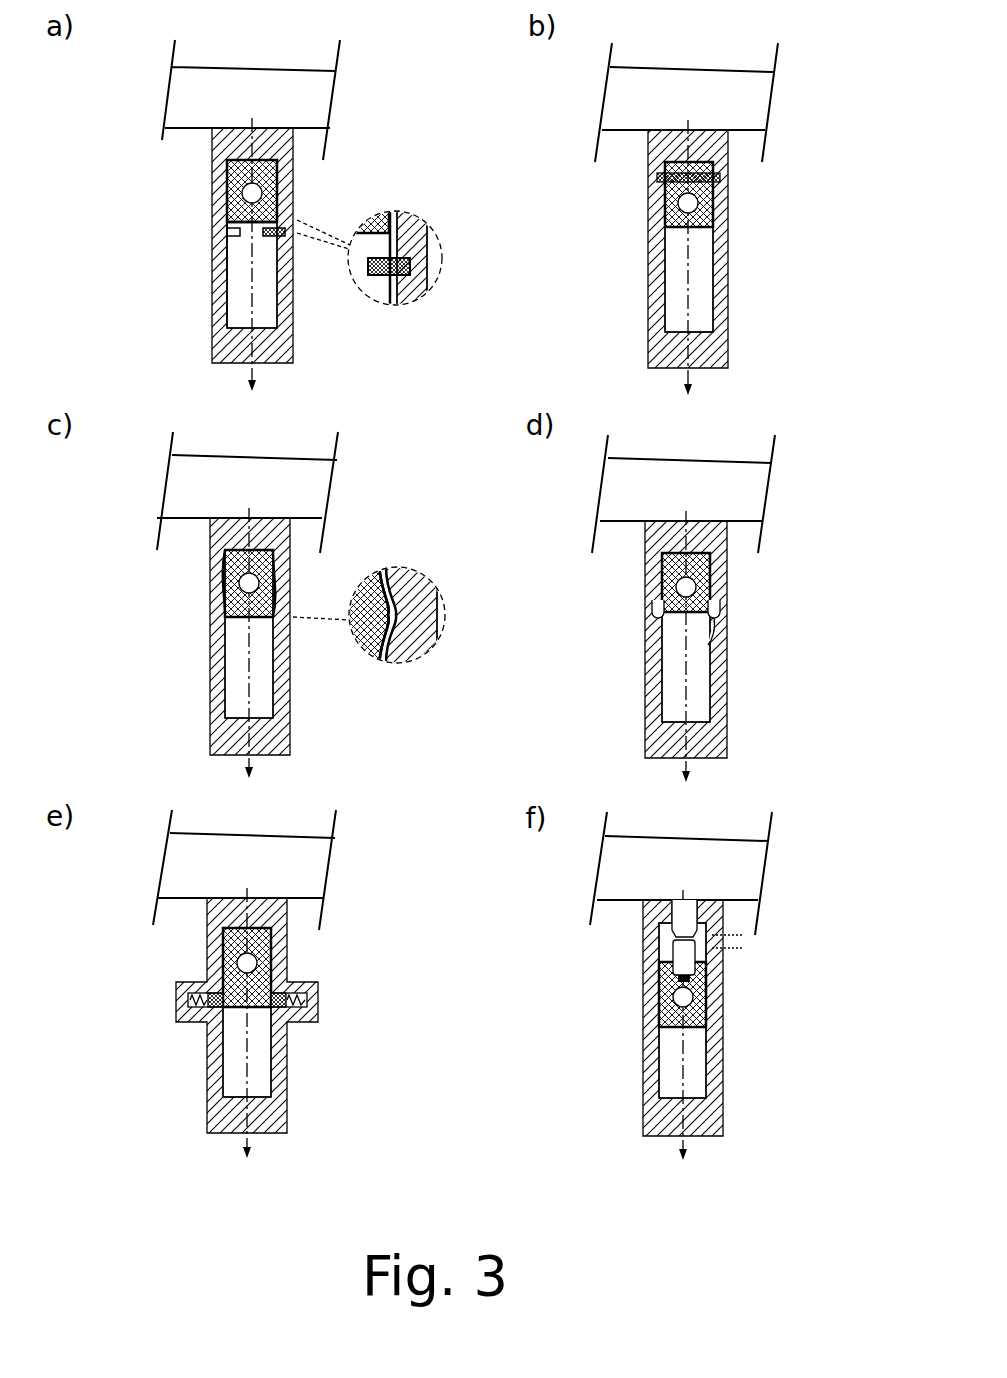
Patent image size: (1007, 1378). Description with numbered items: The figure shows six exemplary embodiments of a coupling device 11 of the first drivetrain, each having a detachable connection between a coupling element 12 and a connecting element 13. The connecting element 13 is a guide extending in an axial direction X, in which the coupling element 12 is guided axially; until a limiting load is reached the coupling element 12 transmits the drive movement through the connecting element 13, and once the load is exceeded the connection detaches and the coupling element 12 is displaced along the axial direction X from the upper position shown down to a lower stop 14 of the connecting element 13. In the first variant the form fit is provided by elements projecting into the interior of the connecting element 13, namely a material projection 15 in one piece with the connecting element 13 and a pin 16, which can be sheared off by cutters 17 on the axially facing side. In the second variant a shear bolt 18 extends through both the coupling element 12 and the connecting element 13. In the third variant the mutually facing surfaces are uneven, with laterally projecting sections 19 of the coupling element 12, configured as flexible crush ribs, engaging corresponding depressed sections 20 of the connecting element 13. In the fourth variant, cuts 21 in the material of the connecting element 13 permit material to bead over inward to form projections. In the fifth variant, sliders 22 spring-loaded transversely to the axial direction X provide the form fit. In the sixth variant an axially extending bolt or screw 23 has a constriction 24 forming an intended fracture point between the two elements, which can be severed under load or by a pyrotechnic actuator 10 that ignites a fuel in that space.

The pyrotechnic actuator 10 is at (716, 960).
The coupling device 11 is at (152, 236).
The coupling element 12 is at (227, 172).
The connecting element 13 is at (225, 348).
The lower stop 14 is at (240, 326).
The material projection 15 is at (212, 248).
The pin 16 is at (268, 237).
The cutters 17 is at (268, 220).
The shear bolt 18 is at (720, 177).
The projecting sections 19 is at (368, 652).
The depressed sections 20 is at (394, 630).
The cuts 21 is at (665, 618).
The sliders 22 is at (232, 1010).
The bolt or screw 23 is at (688, 900).
The constriction 24 is at (660, 936).
The axial direction X is at (252, 378).